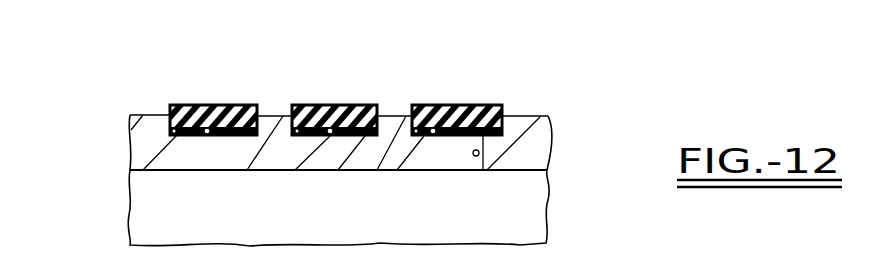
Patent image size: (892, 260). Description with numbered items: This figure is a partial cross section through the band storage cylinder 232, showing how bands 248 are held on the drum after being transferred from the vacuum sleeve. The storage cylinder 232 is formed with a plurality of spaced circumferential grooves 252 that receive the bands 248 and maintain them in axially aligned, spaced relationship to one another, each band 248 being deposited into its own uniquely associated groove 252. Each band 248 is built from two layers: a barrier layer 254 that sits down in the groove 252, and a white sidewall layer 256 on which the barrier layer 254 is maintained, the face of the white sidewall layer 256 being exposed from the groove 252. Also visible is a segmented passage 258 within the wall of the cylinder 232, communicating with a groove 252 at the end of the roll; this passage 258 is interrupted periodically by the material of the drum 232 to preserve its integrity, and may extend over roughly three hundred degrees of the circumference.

The band storage cylinder 232 is at (130, 153).
The band 248 is at (214, 93).
The circumferential groove 252 is at (207, 134).
The barrier layer 254 is at (140, 141).
The white sidewall layer 256 is at (200, 107).
The segmented passage 258 is at (484, 163).